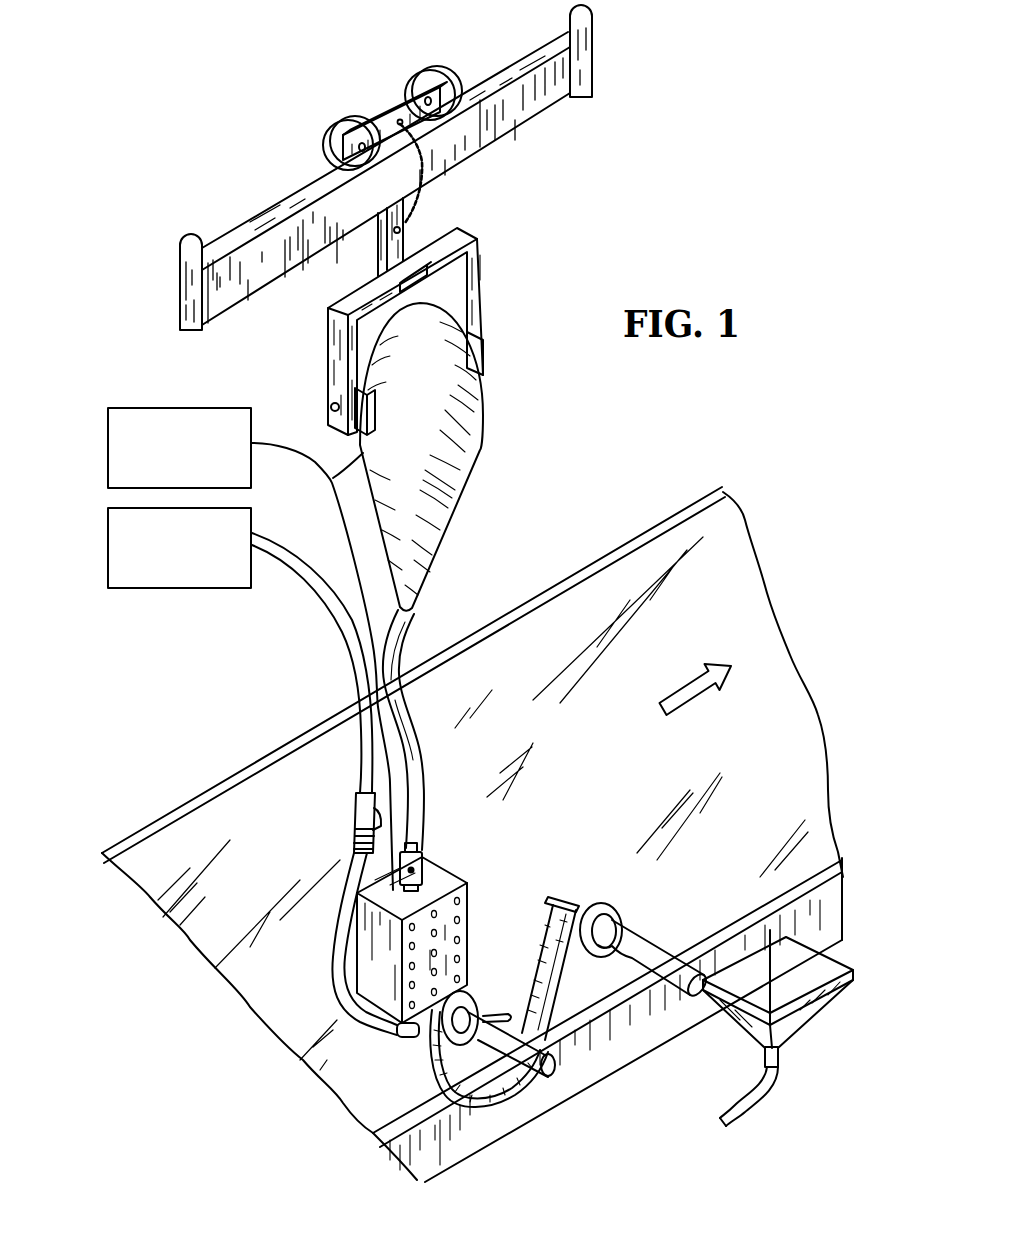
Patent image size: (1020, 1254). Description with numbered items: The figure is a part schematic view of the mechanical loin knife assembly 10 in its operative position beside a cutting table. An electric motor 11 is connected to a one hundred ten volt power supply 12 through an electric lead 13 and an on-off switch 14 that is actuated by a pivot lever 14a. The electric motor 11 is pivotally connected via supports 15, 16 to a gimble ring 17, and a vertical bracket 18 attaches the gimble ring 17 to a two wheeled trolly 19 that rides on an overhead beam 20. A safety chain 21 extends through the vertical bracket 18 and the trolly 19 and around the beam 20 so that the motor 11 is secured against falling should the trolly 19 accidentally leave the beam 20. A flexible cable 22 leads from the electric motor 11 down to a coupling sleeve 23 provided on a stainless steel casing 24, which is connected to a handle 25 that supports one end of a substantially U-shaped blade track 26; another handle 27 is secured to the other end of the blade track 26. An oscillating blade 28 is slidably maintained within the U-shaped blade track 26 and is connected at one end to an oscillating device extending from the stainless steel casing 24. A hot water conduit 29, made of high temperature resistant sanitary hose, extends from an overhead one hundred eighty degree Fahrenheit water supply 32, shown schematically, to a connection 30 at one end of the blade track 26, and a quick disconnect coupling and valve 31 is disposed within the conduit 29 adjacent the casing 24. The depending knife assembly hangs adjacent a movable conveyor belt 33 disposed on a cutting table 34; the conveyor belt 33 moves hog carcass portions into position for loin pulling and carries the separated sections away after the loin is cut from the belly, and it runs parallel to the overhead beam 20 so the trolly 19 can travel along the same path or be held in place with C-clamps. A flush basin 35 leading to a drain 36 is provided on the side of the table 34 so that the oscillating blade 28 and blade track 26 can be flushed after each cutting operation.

The mechanical loin knife assembly 10 is at (545, 514).
The electric motor 11 is at (449, 420).
The 110 v power supply 12 is at (163, 407).
The electric lead 13 is at (333, 472).
The on-off switch 14 is at (497, 1047).
The pivot lever 14a is at (497, 1018).
The support 15 is at (485, 352).
The support 16 is at (368, 392).
The gimble ring 17 is at (483, 280).
The vertical bracket 18 is at (378, 250).
The two wheeled trolly 19 is at (378, 97).
The overhead beam 20 is at (523, 110).
The safety chain 21 is at (423, 177).
The flexible cable 22 is at (418, 747).
The connector 23 is at (424, 858).
The stainless steel casing 24 is at (450, 880).
The handle 25 is at (555, 1066).
The U-shaped blade track 26 is at (547, 940).
The handle 27 is at (640, 945).
The oscillating blade 28 is at (565, 977).
The hot water conduit 29 is at (323, 600).
The connection 30 is at (402, 1042).
The quick disconnect coupling and valve 31 is at (357, 805).
The 180° F. water supply 32 is at (183, 590).
The conveyor belt 33 is at (641, 790).
The cutting table 34 is at (645, 1033).
The flush basin 35 is at (750, 950).
The drain 36 is at (758, 1096).